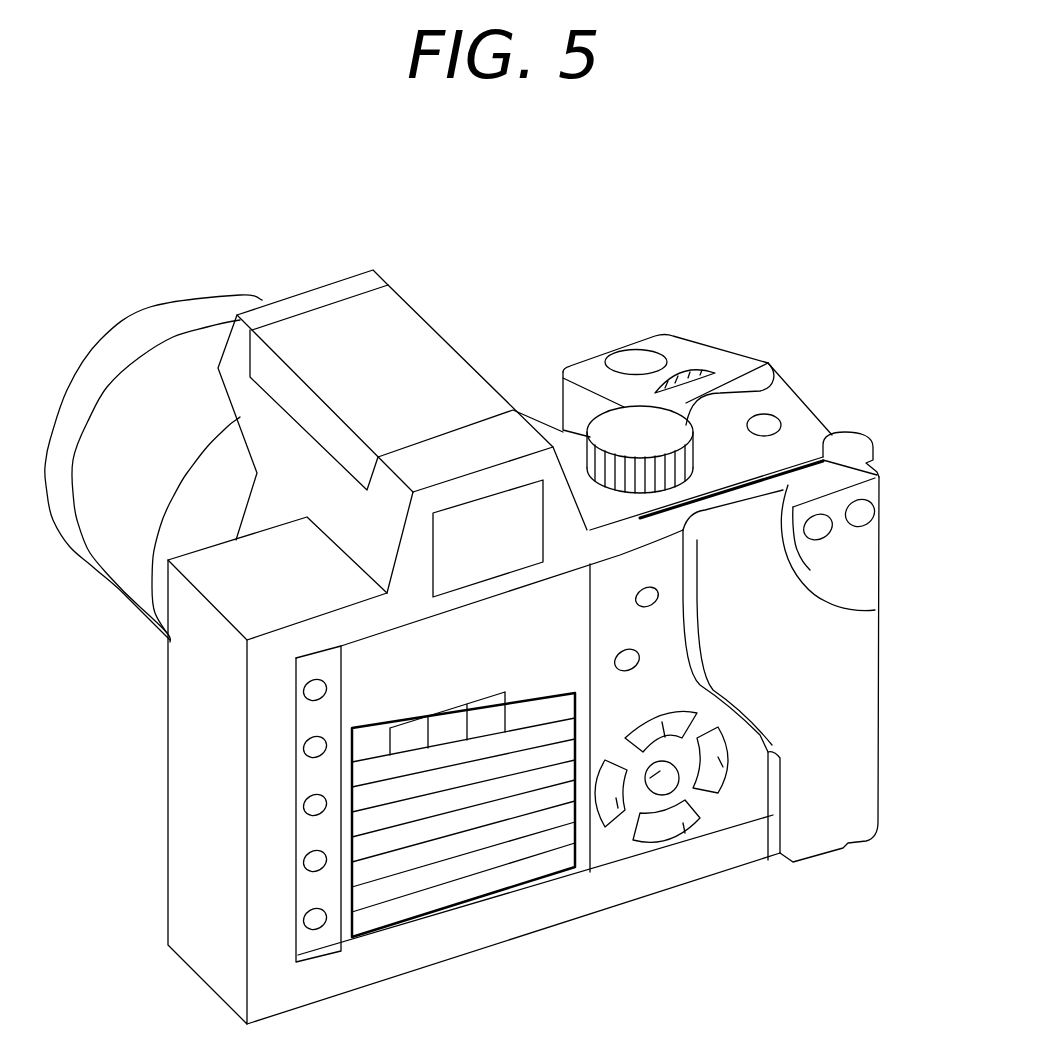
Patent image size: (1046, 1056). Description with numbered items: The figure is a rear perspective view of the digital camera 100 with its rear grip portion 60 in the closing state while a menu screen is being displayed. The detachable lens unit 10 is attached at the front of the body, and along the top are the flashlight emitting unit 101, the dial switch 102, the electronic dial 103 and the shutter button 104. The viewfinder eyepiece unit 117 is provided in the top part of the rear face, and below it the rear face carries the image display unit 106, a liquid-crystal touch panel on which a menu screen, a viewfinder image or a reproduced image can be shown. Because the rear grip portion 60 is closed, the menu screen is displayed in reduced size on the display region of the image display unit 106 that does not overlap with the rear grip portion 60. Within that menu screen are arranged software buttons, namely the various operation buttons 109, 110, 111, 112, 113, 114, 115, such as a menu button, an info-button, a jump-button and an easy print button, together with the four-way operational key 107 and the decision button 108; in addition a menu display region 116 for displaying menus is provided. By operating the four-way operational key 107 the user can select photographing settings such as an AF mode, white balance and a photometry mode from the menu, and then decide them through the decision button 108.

The detachable lens unit 10 is at (173, 367).
The digital camera 100 is at (522, 240).
The flashlight emitting unit 101 is at (393, 330).
The dial switch 102 is at (778, 380).
The electronic dial 103 is at (690, 388).
The shutter button 104 is at (627, 362).
The image display unit 106 is at (610, 872).
The four-way operational key 107 is at (662, 723).
The decision button 108 is at (641, 727).
The operation button 109 is at (658, 594).
The operation button 110 is at (633, 648).
The operation button 111 is at (303, 697).
The operation button 112 is at (303, 753).
The operation button 113 is at (303, 809).
The operation button 114 is at (303, 866).
The operation button 115 is at (303, 925).
The menu display region 116 is at (453, 890).
The viewfinder eyepiece unit 117 is at (500, 522).
The rear grip portion 60 is at (860, 657).